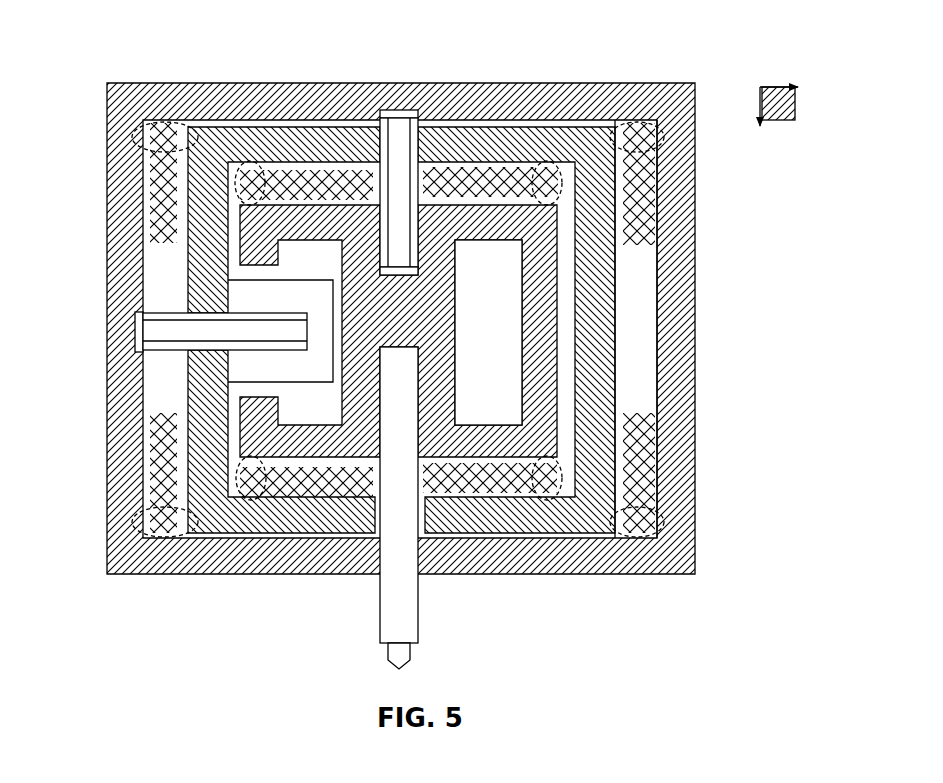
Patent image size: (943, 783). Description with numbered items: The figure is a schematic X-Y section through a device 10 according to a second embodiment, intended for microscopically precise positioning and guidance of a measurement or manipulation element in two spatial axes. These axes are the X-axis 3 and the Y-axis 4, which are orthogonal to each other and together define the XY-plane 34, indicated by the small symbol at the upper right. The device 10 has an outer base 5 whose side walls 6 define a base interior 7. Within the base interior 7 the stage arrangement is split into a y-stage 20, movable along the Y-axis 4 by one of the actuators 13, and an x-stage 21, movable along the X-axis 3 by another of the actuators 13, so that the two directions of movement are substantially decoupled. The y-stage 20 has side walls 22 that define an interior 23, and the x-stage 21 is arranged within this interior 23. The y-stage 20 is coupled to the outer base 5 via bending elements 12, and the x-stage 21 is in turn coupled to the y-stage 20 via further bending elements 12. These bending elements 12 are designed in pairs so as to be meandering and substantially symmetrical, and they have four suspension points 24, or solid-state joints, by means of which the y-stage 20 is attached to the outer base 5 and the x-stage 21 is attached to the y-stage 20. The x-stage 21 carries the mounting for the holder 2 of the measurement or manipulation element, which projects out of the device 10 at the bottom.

The holder 2 is at (402, 658).
The X-axis 3 is at (759, 86).
The Y-axis 4 is at (783, 86).
The outer base 5 is at (387, 311).
The side walls 6 is at (530, 103).
The base interior 7 is at (654, 392).
The device 10 is at (438, 348).
The bending elements 12 is at (360, 180).
The actuators 13 is at (397, 138).
The y-stage 20 is at (394, 411).
The x-stage 21 is at (492, 438).
The side walls 22 is at (295, 147).
The interior 23 is at (282, 497).
The suspension points 24 is at (233, 163).
The XY-plane 34 is at (778, 120).